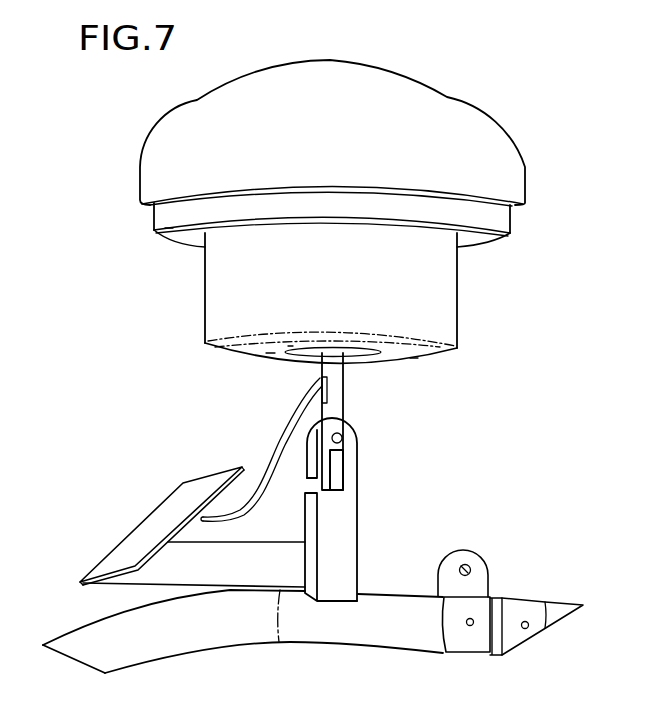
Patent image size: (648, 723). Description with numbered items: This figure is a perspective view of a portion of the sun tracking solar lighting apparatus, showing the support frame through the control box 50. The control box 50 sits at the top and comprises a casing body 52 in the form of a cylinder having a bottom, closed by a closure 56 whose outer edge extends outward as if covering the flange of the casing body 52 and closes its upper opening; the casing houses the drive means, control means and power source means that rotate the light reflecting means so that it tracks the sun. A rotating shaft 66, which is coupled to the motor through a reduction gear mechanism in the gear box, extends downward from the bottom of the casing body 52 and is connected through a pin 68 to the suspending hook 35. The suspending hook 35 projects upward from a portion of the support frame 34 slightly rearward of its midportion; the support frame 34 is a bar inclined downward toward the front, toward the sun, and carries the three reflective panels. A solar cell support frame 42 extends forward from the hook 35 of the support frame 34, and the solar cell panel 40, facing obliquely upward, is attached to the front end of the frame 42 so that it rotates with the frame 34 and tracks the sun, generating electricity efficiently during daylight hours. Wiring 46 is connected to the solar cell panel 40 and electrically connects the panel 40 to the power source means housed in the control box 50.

The control box 50 is at (530, 148).
The closure 56 is at (443, 92).
The casing body 52 is at (437, 310).
The rotating shaft 66 is at (343, 398).
The pivot pin 68 is at (342, 438).
The suspending hook 35 is at (360, 528).
The support frame 34 is at (403, 595).
The solar cell panel 40 is at (168, 500).
The wiring 46 is at (277, 440).
The solar cell support frame 42 is at (170, 570).